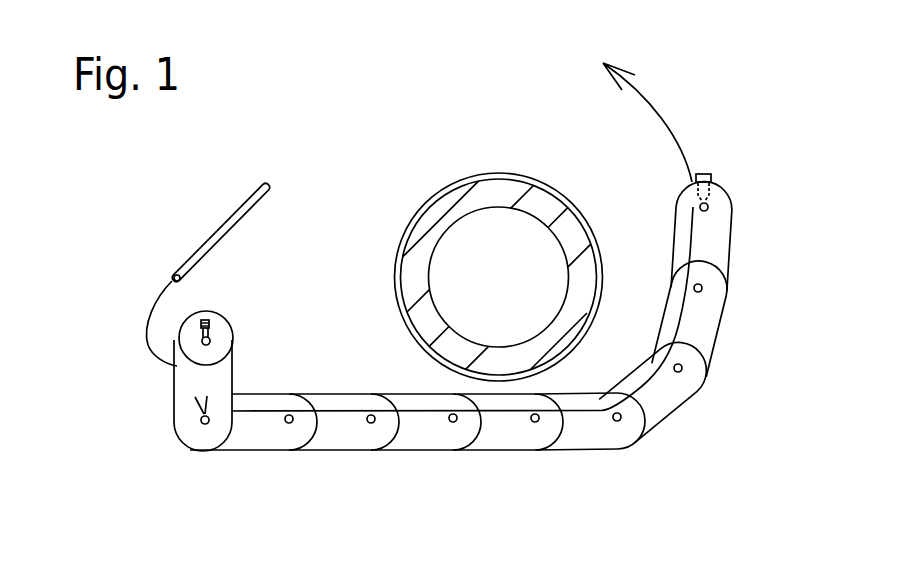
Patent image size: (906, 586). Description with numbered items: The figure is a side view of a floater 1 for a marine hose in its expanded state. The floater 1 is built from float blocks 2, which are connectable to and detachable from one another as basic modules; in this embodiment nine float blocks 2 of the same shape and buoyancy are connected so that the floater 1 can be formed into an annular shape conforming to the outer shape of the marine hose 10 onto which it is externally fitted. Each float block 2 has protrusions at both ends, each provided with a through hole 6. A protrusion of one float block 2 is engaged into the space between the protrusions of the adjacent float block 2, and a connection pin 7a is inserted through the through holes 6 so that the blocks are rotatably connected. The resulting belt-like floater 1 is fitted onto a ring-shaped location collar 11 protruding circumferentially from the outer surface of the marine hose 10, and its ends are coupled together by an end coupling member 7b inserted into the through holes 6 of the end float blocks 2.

The floater 1 is at (446, 328).
The float block 2 is at (223, 385).
The through hole 6 is at (212, 342).
The connection pin 7a is at (220, 230).
The end coupling member 7b is at (212, 327).
The marine hose 10 is at (457, 232).
The location collar 11 is at (405, 255).